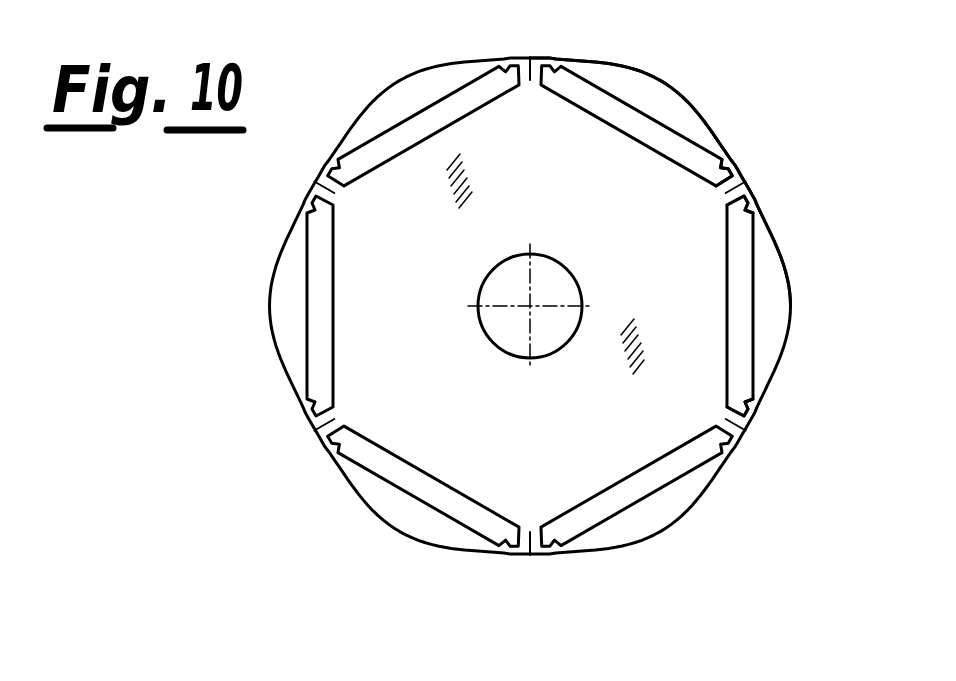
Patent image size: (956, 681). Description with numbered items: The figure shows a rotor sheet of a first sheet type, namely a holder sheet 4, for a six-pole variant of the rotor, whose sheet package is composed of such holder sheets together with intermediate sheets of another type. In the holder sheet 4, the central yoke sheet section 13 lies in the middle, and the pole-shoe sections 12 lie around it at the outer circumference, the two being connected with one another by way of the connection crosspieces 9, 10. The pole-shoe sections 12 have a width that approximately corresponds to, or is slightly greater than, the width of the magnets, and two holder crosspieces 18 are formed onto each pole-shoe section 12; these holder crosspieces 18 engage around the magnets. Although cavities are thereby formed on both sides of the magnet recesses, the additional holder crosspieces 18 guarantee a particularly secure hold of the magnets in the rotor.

The holder sheet 4 is at (733, 73).
The connection crosspiece 9 is at (532, 534).
The connection crosspiece 10 is at (327, 443).
The pole-shoe section 12 is at (770, 240).
The central yoke sheet section 13 is at (424, 334).
The holder crosspiece 18 is at (733, 400).